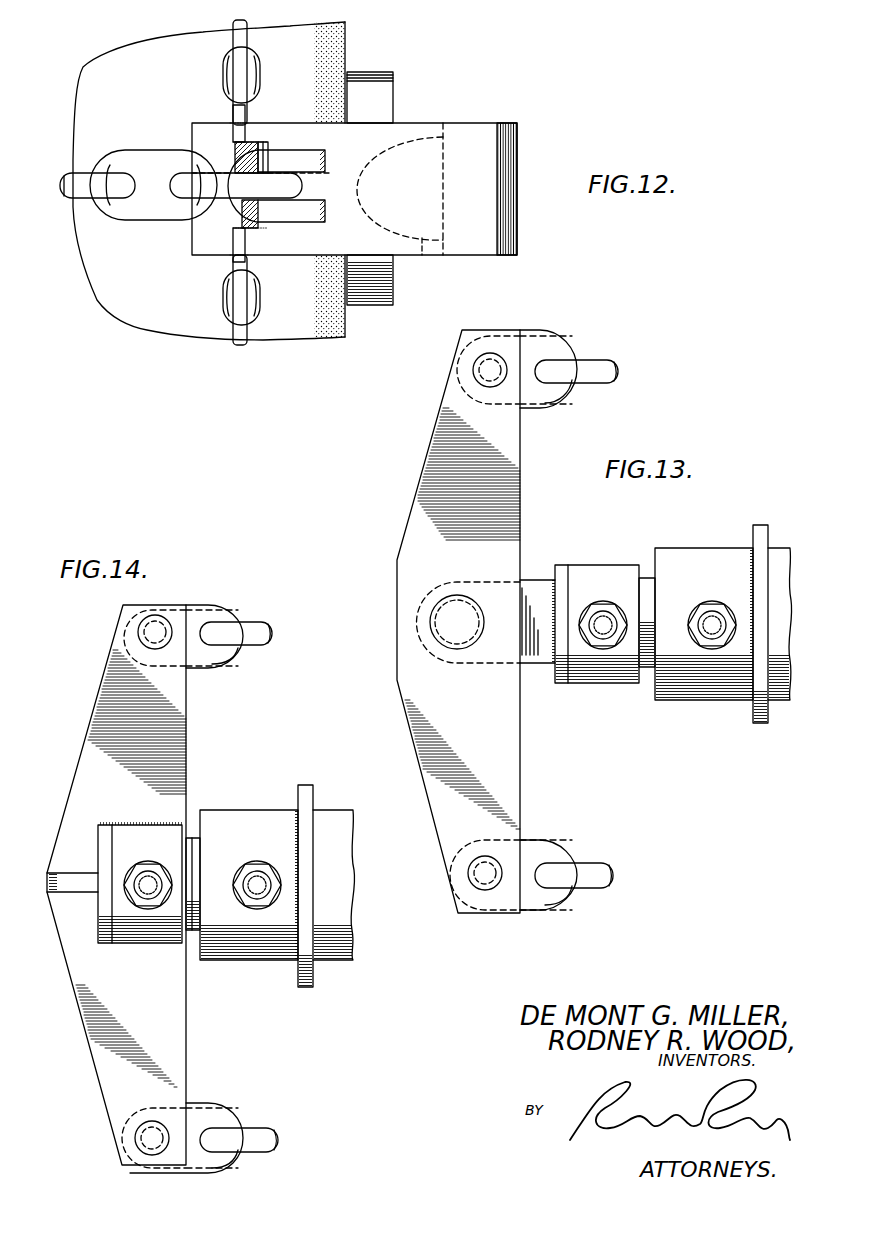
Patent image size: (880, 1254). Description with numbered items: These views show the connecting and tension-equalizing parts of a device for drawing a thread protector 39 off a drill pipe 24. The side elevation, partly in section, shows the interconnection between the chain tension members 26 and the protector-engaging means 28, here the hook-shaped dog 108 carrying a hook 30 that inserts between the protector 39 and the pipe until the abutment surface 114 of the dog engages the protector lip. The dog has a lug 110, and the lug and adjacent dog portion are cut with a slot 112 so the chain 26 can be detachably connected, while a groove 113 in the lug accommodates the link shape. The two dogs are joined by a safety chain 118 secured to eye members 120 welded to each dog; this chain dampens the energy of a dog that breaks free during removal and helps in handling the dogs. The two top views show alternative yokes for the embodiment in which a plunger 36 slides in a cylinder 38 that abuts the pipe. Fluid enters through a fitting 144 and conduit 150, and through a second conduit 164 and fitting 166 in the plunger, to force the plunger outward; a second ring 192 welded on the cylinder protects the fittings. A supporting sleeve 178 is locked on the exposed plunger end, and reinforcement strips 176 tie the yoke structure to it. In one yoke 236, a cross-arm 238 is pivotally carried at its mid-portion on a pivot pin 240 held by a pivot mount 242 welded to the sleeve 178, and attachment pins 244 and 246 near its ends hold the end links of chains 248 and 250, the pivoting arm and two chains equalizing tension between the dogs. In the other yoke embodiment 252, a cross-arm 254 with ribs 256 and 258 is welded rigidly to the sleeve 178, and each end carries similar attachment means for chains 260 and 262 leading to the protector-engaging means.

In FIG. 12, the drill pipe 24 is at (372, 300).
In FIG. 12, the tension members 26 is at (82, 188).
In FIG. 12, the protector-engaging means 28 is at (480, 121).
In FIG. 12, the hooks 30 is at (422, 255).
In FIG. 13, the plunger 36 is at (648, 668).
In FIG. 14, the plunger 36 is at (189, 838).
In FIG. 13, the cylinder 38 is at (782, 553).
In FIG. 14, the cylinder 38 is at (333, 811).
In FIG. 12, the protector 39 is at (108, 290).
In FIG. 12, the hook-shaped dog 108 is at (426, 123).
In FIG. 12, the lug 110 is at (252, 142).
In FIG. 12, the slot 112 is at (224, 178).
In FIG. 12, the groove 113 is at (262, 155).
In FIG. 12, the abutment surface 114 is at (450, 166).
In FIG. 12, the safety chain 118 is at (226, 70).
In FIG. 12, the eye members 120 is at (238, 104).
In FIG. 13, the fluid fitting 144 is at (717, 608).
In FIG. 14, the fluid fitting 144 is at (257, 870).
In FIG. 13, the conduit 150 is at (707, 635).
In FIG. 14, the conduit 150 is at (248, 880).
In FIG. 13, the second conduit 164 is at (605, 634).
In FIG. 14, the second conduit 164 is at (140, 889).
In FIG. 13, the fitting 166 is at (596, 618).
In FIG. 14, the fitting 166 is at (135, 874).
In FIG. 13, the reinforcement strips 176 is at (560, 683).
In FIG. 13, the supporting sleeve 178 is at (590, 565).
In FIG. 14, the supporting sleeve 178 is at (145, 825).
In FIG. 13, the second ring 192 is at (760, 723).
In FIG. 14, the second ring 192 is at (305, 915).
In FIG. 13, the yoke 236 is at (398, 545).
In FIG. 13, the cross-arm 238 is at (410, 705).
In FIG. 13, the pivot pin 240 is at (457, 635).
In FIG. 13, the pivot mount 242 is at (540, 580).
In FIG. 13, the attachment pin 244 is at (474, 373).
In FIG. 13, the attachment pin 246 is at (470, 878).
In FIG. 13, the chain 248 is at (553, 395).
In FIG. 13, the chain 250 is at (545, 845).
In FIG. 14, the yoke embodiment 252 is at (78, 732).
In FIG. 14, the cross-arm 254 is at (172, 718).
In FIG. 14, the rib 256 is at (57, 887).
In FIG. 14, the rib 258 is at (105, 825).
In FIG. 14, the chain 260 is at (222, 608).
In FIG. 14, the chain 262 is at (220, 1106).